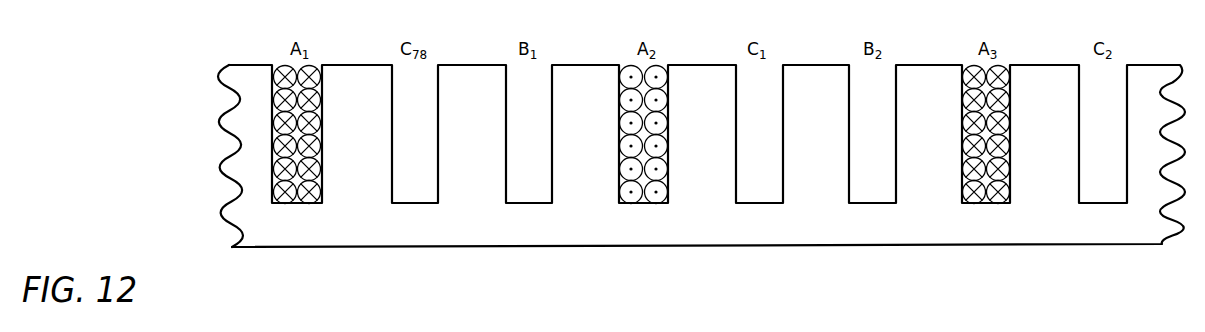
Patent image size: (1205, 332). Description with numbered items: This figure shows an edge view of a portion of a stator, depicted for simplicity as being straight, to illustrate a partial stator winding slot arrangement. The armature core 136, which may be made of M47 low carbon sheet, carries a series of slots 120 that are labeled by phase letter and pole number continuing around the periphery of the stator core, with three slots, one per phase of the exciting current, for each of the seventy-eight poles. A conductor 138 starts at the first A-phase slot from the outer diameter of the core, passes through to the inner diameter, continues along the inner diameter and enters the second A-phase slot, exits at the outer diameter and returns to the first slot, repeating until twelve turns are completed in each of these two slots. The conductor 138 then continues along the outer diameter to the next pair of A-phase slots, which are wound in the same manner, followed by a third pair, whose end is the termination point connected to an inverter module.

The slots 120 is at (277, 58).
The armature core 136 is at (230, 122).
The conductor (coil) 138 is at (282, 78).